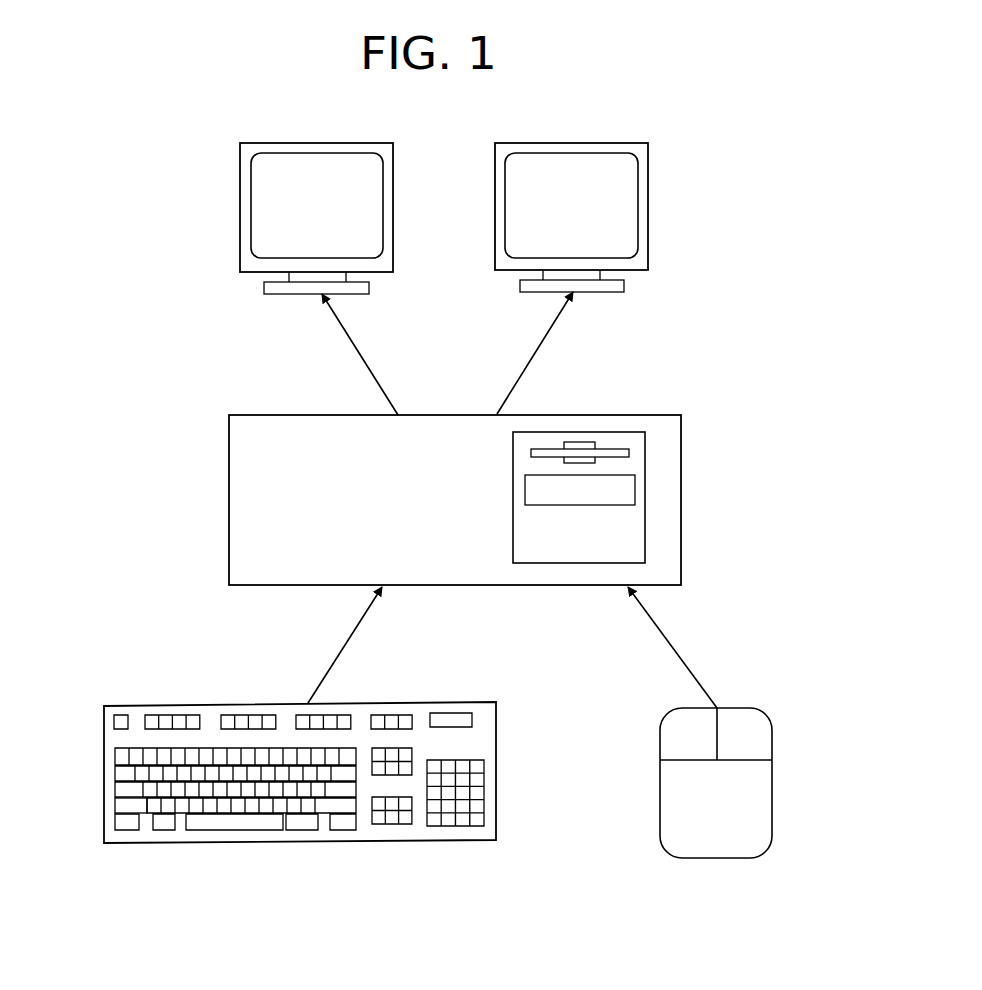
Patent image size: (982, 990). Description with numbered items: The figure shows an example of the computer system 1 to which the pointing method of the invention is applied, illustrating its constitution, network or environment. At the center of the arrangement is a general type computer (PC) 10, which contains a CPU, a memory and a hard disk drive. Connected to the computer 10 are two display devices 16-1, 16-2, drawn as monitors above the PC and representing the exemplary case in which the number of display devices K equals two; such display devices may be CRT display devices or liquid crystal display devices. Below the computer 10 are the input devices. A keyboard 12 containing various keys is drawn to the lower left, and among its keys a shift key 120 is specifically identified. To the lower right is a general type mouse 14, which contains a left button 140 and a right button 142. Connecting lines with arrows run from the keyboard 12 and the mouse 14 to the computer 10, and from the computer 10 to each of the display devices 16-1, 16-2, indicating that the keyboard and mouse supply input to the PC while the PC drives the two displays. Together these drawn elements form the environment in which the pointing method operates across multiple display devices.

The computer system 1 is at (158, 142).
The computer (PC) 10 is at (450, 528).
The keyboard 12 is at (355, 843).
The mouse 14 is at (708, 858).
The display device 16-1 is at (289, 247).
The display device 16-2 is at (544, 247).
The shift key 120 is at (124, 803).
The left button 140 is at (687, 730).
The right button 142 is at (740, 732).